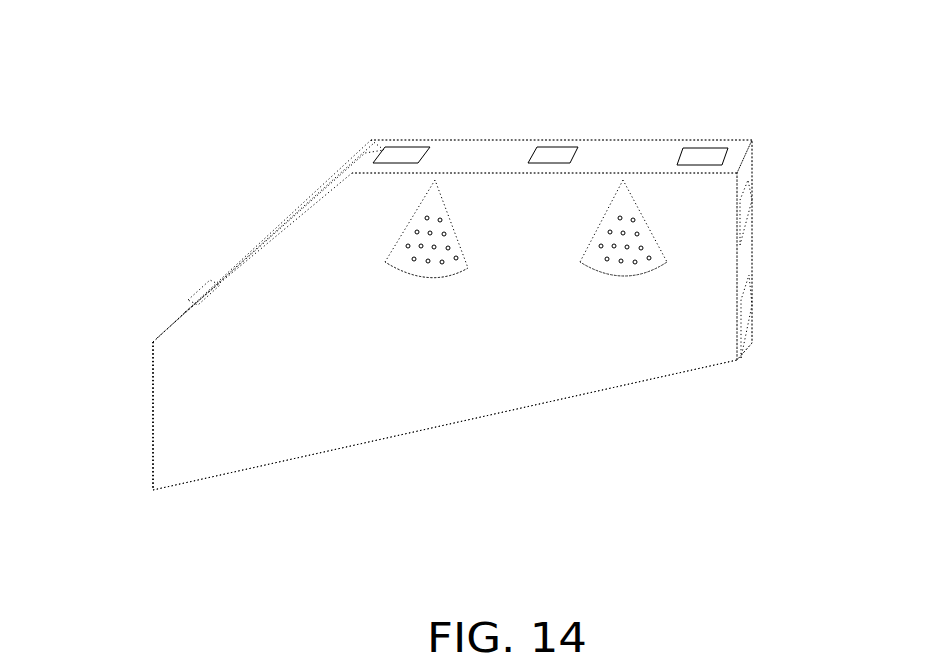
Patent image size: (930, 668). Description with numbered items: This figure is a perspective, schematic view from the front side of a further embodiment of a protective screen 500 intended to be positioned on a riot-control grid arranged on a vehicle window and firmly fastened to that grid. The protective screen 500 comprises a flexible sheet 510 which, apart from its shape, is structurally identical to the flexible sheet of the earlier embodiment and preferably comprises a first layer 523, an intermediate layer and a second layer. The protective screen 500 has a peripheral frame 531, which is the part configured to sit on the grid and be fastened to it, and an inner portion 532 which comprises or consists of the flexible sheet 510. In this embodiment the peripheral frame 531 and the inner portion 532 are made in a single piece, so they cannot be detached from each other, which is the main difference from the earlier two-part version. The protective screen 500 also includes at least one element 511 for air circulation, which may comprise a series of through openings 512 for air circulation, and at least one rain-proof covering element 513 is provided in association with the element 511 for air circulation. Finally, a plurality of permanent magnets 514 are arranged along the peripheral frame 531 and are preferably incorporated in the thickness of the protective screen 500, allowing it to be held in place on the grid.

The protective screen 500 is at (287, 150).
The flexible sheet 510 is at (201, 379).
The element for air circulation 511 is at (438, 288).
The through openings 512 is at (413, 257).
The rain-proof covering element 513 is at (440, 207).
The permanent magnets 514 is at (397, 153).
The first layer 523 is at (696, 313).
The peripheral frame 531 is at (618, 155).
The inner portion 532 is at (237, 377).